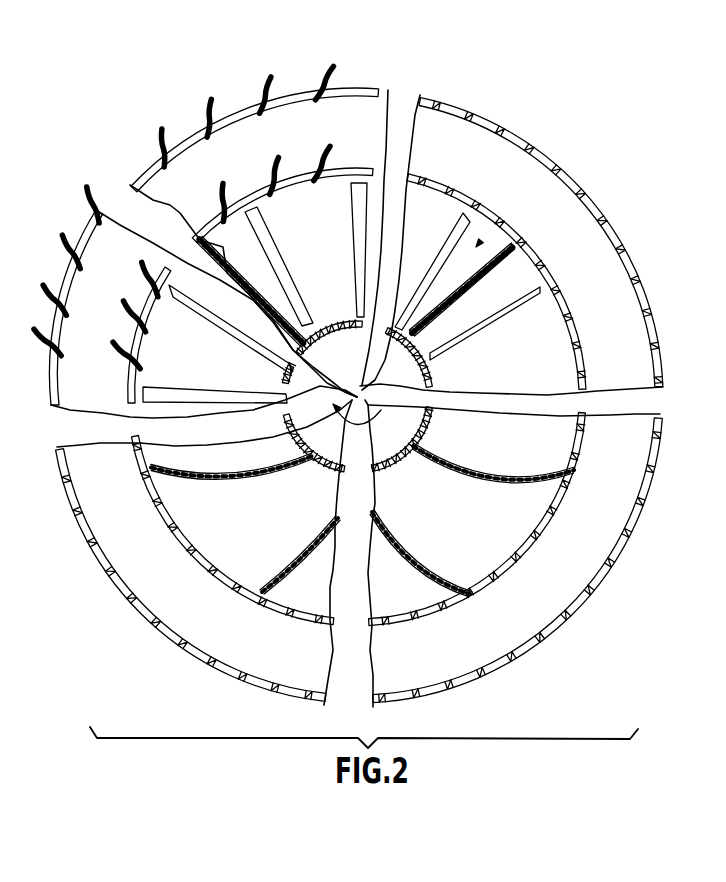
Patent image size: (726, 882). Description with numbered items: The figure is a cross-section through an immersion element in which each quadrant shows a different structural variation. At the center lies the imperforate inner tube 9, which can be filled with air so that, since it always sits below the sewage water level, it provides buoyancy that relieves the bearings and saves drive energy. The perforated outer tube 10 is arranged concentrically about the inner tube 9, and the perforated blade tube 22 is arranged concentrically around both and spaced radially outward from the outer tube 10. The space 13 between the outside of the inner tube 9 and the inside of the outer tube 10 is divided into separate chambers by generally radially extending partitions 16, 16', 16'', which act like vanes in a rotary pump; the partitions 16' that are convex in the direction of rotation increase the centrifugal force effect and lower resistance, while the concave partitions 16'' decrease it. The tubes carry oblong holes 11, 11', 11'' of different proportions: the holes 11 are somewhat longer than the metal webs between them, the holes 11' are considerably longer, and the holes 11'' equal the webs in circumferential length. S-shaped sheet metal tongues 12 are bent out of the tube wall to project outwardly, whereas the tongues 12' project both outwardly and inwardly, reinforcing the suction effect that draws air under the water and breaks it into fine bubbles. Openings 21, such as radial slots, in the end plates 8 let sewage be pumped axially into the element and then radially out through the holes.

The end plate 8 is at (425, 205).
The imperforate inner tube 9 is at (398, 341).
The perforated outer tube 10 is at (415, 166).
The oblong hole 11 is at (131, 606).
The oblong hole 11' is at (410, 221).
The hole 11'' is at (513, 553).
The S-shaped sheet metal tongue 12 is at (100, 214).
The S-shaped sheet metal tongue 12' is at (259, 222).
The space 13 is at (478, 245).
The partition 16 is at (512, 268).
The convex partition 16' is at (482, 536).
The concave partition 16'' is at (224, 538).
The opening 21 is at (465, 212).
The perforated blade tube 22 is at (520, 137).